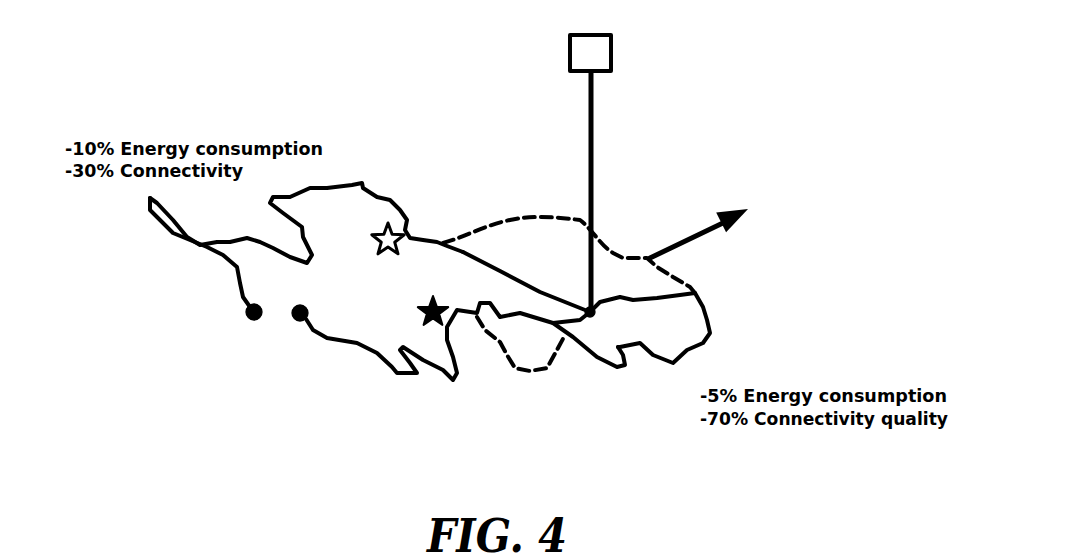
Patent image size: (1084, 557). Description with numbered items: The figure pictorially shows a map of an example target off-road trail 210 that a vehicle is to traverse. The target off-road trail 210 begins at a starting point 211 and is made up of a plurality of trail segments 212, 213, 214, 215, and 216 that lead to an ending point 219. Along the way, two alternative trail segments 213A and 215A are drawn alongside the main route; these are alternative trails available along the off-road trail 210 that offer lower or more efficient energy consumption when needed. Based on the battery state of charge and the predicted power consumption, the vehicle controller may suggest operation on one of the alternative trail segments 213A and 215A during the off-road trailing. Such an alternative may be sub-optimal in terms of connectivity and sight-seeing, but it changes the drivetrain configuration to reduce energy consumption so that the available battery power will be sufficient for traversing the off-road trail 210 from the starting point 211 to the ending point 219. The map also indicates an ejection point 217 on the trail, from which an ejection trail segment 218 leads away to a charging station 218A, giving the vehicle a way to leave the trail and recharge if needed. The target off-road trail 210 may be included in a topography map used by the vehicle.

The target off-road trail 210 is at (425, 238).
The starting point 211 is at (299, 321).
The trail segment 212 is at (392, 370).
The trail segment 213 is at (553, 327).
The alternative trail segment 213A is at (520, 372).
The trail segment 214 is at (711, 333).
The trail segment 215 is at (620, 297).
The alternative trail segment 215A is at (650, 258).
The trail segment 216 is at (358, 182).
The ejection point 217 is at (590, 316).
The ejection trail segment 218 is at (588, 184).
The charging station 218A is at (613, 50).
The ending point 219 is at (251, 319).